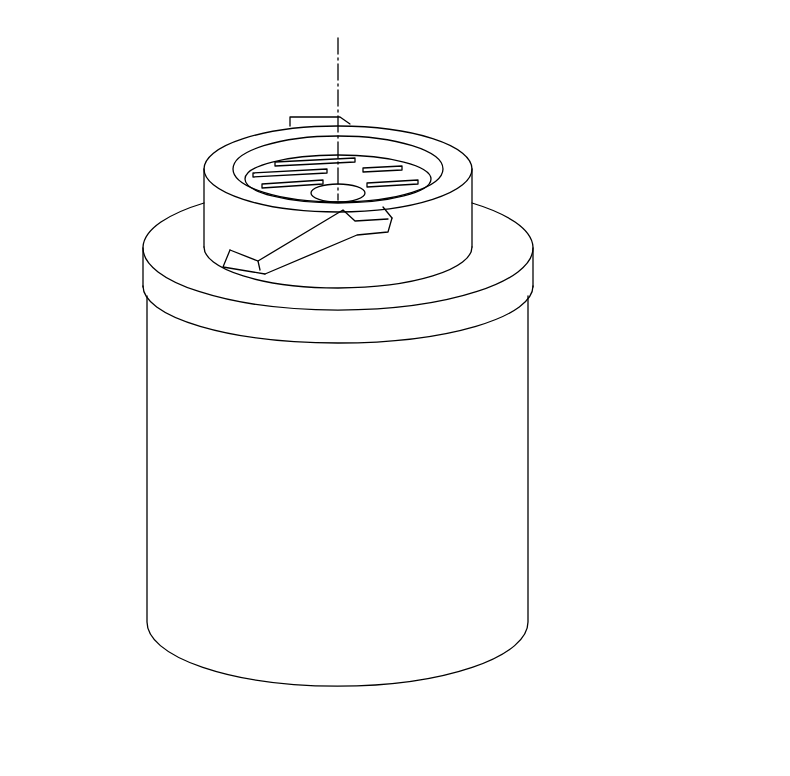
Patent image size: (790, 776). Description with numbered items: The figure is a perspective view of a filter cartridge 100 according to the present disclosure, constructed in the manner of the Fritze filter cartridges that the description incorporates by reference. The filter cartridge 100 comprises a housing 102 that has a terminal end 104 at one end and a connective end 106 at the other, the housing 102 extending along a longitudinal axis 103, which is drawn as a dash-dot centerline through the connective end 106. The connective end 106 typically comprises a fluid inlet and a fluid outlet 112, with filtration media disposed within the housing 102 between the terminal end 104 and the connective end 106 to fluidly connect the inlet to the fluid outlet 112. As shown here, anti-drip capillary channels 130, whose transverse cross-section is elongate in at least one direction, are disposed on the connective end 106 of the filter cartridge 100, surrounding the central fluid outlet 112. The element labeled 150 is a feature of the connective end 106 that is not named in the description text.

The filter cartridge 100 is at (480, 76).
The housing 102 is at (135, 242).
The longitudinal axis 103 is at (340, 50).
The terminal end 104 is at (550, 581).
The connective end 106 is at (198, 141).
The fluid outlet 112 is at (327, 192).
The anti-drip capillary channels 130 is at (413, 183).
The cap outer wall 150 is at (470, 192).